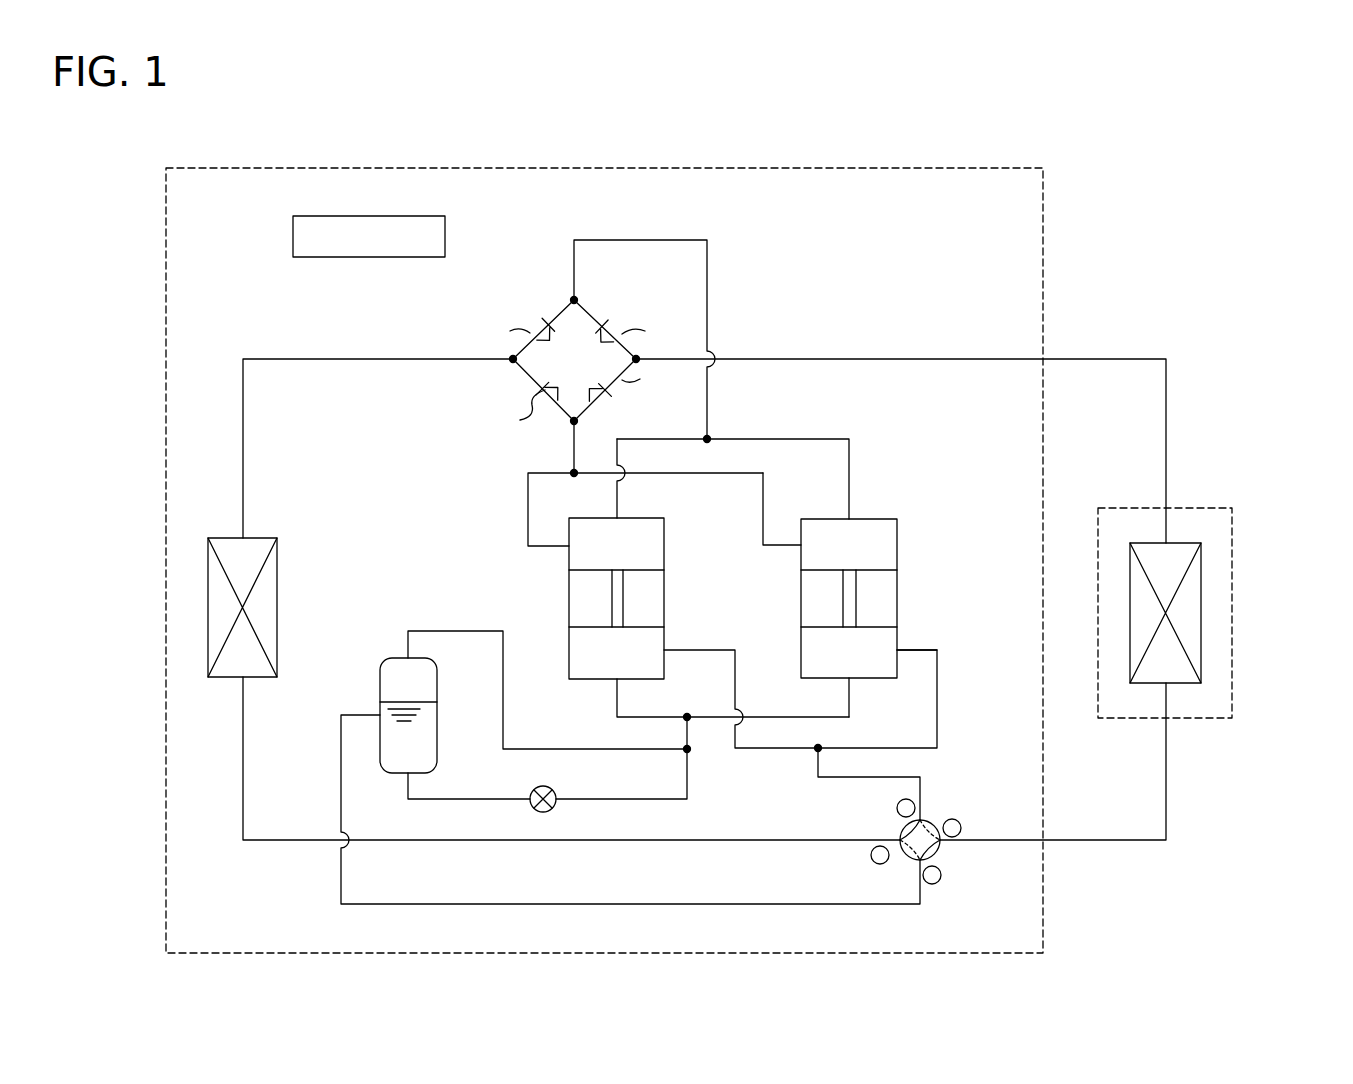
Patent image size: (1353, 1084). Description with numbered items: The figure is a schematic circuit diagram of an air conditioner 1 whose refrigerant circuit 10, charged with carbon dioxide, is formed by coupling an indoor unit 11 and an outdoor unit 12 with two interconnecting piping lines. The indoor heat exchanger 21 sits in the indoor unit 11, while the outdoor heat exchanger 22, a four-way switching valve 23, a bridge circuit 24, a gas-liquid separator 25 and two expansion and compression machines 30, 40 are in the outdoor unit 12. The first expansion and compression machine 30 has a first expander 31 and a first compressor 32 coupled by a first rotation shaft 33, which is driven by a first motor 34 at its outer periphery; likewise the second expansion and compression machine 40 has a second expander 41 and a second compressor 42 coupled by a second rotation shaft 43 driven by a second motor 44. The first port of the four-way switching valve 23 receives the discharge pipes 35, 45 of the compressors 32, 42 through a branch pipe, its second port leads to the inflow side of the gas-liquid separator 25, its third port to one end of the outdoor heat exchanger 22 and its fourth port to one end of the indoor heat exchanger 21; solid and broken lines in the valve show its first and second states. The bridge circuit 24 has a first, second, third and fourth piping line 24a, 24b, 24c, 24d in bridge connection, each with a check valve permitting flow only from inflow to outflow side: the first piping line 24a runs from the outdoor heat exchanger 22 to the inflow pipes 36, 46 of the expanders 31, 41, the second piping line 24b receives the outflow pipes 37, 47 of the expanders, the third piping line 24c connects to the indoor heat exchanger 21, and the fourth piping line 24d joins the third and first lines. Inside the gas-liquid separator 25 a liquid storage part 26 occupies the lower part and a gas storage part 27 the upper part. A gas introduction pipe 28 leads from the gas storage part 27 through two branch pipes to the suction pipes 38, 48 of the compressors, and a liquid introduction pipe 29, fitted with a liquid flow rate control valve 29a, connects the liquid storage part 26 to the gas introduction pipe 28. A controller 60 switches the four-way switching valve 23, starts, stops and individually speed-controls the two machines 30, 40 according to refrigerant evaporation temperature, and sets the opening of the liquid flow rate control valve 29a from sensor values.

The air conditioner 1 is at (1285, 160).
The refrigerant circuit 10 is at (890, 345).
The indoor unit 11 is at (1165, 599).
The outdoor unit 12 is at (889, 168).
The indoor heat exchanger 21 is at (1178, 688).
The outdoor heat exchanger 22 is at (262, 688).
The four-way switching valve 23 is at (955, 849).
The bridge circuit 24 is at (576, 339).
The first piping line 24a is at (522, 375).
The second piping line 24b is at (558, 310).
The third piping line 24c is at (592, 310).
The fourth piping line 24d is at (603, 405).
The gas-liquid separator 25 is at (619, 742).
The liquid storage part 26 is at (432, 755).
The gas storage part 27 is at (380, 680).
The gas introduction pipe 28 is at (498, 632).
The liquid introduction pipe 29 is at (549, 795).
The liquid flow rate control valve 29a is at (553, 810).
The first expansion and compression machine 30 is at (701, 594).
The first expander 31 is at (664, 546).
The first compressor 32 is at (569, 652).
The first rotation shaft 33 is at (620, 585).
The first motor 34 is at (569, 598).
The discharge pipe 35 is at (710, 650).
The inflow pipe 36 is at (545, 545).
The outflow pipe 37 is at (617, 500).
The suction pipe 38 is at (617, 704).
The second expansion and compression machine 40 is at (816, 629).
The second expander 41 is at (897, 535).
The second compressor 42 is at (801, 645).
The second rotation shaft 43 is at (850, 593).
The second motor 44 is at (801, 598).
The discharge pipe 45 is at (926, 650).
The inflow pipe 46 is at (778, 545).
The outflow pipe 47 is at (849, 478).
The suction pipe 48 is at (849, 695).
The controller 60 is at (270, 216).